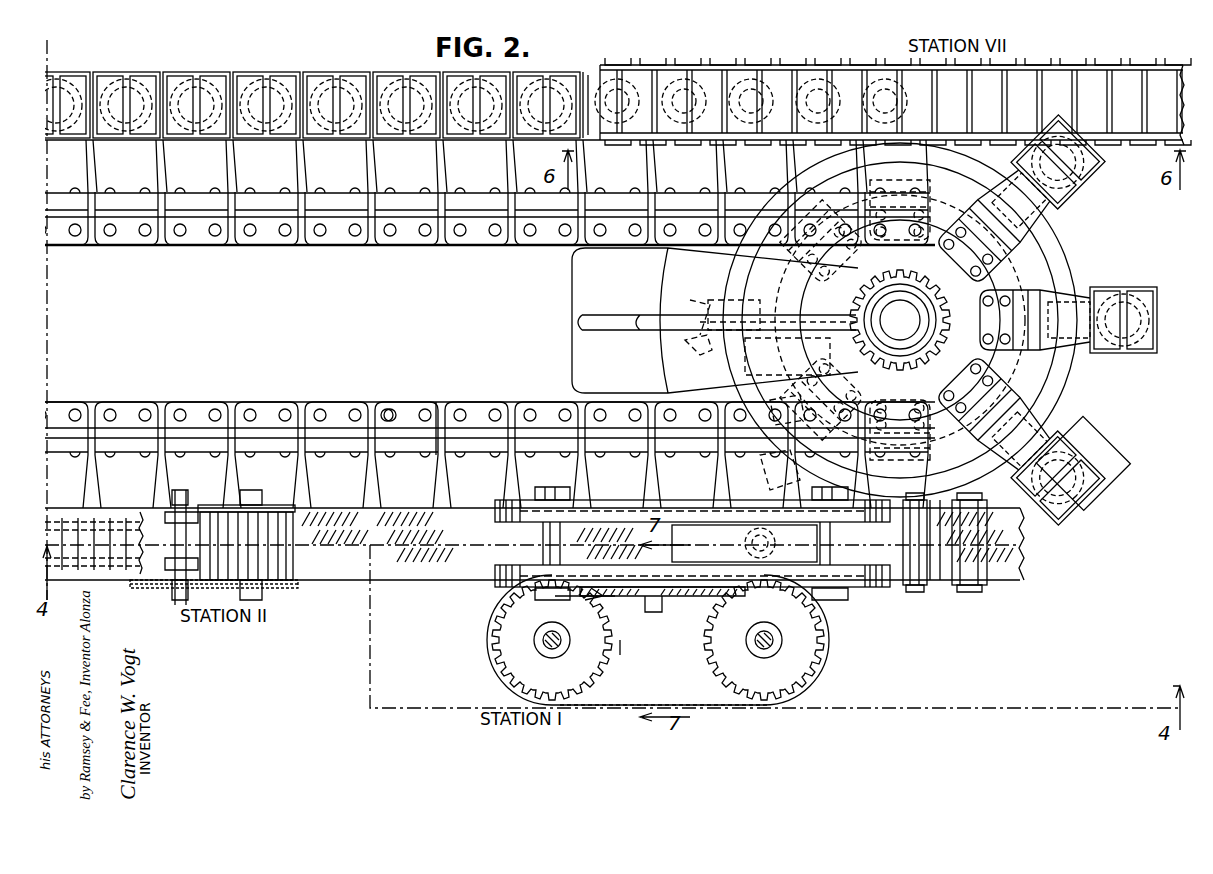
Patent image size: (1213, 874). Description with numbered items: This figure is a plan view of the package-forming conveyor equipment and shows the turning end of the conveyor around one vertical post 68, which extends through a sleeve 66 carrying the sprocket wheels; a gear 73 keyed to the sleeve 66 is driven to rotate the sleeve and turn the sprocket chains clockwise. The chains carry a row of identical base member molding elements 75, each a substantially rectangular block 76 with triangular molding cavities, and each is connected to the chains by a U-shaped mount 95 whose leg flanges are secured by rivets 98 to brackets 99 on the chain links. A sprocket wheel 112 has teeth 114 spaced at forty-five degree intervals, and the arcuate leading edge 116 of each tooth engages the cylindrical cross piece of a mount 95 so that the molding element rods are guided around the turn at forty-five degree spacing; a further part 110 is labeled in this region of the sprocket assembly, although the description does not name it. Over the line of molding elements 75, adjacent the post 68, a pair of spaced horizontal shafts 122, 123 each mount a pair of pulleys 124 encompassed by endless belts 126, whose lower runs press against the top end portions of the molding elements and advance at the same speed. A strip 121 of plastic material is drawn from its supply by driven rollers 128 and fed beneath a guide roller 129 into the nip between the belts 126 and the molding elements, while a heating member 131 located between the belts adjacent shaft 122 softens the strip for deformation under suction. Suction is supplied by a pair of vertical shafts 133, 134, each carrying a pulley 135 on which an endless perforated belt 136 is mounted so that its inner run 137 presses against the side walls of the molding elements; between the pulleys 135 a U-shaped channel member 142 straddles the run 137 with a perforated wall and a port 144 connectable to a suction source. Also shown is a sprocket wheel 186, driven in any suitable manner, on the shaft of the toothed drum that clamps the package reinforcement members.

The sleeve 66 is at (995, 358).
The vertical post 68 is at (913, 345).
The gear 73 is at (985, 282).
The base member molding element 75 is at (1118, 484).
The rectangular block 76 is at (1072, 505).
The U-shaped mount 95 is at (337, 458).
The rivet 98 is at (432, 412).
The bracket 99 is at (399, 412).
The cam follower 110 is at (760, 472).
The sprocket wheel 112 is at (740, 348).
The tooth 114 is at (705, 340).
The leading edge 116 is at (690, 340).
The strip of plastic material 121 is at (1018, 578).
The horizontal shaft 122 is at (878, 592).
The horizontal shaft 123 is at (540, 542).
The pulley 124 is at (495, 585).
The endless belt 126 is at (744, 543).
The driven roller 128 is at (982, 590).
The guide roller 129 is at (935, 592).
The heating member 131 is at (800, 548).
The vertical shaft 133 is at (768, 650).
The vertical shaft 134 is at (545, 642).
The pulley 135 is at (515, 634).
The endless perforated belt 136 is at (655, 700).
The inner run 137 is at (660, 598).
The U-shaped channel member 142 is at (600, 602).
The port 144 is at (631, 642).
The sprocket wheel 186 is at (296, 584).